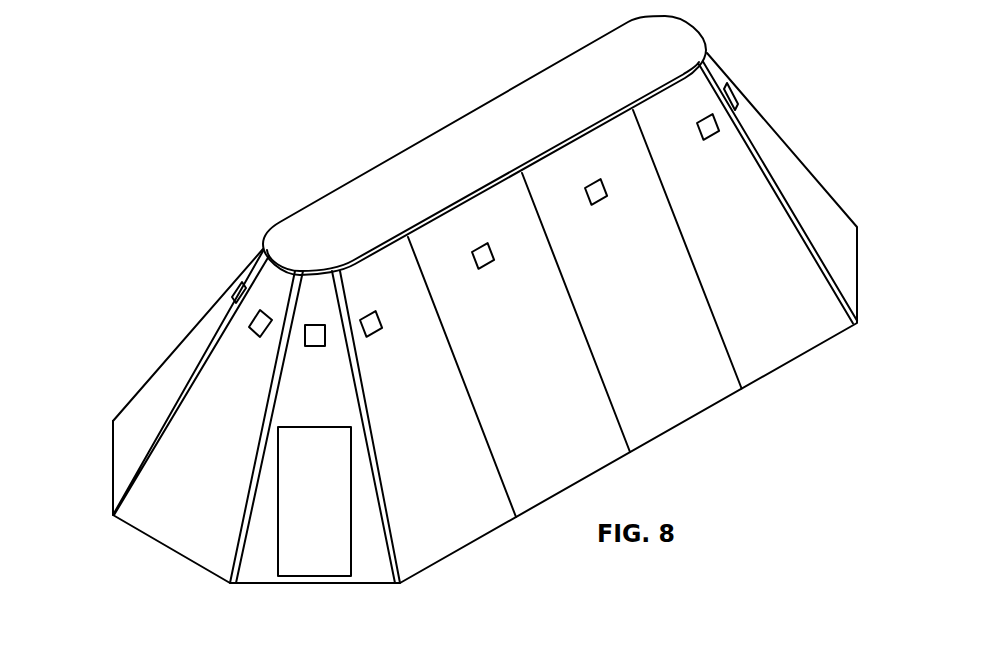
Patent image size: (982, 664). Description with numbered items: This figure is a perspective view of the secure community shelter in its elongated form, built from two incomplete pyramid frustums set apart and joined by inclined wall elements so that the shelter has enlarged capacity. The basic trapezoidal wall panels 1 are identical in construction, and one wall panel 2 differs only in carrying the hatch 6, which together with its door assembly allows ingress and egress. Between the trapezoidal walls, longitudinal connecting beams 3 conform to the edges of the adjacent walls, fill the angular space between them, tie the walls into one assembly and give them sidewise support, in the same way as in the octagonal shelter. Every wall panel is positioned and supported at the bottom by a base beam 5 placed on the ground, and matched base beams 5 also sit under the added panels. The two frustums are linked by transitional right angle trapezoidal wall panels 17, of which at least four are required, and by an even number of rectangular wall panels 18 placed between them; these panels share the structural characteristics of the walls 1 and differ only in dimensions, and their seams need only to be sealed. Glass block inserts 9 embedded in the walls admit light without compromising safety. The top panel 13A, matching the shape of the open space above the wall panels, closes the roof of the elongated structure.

The wall panel 1 is at (200, 415).
The wall panel with door hatch 2 is at (300, 398).
The longitudinal connecting beam 3 is at (213, 352).
The base beam 5 is at (113, 473).
The hatch 6 is at (310, 502).
The glass block insert 9 is at (233, 280).
The top panel 13A is at (308, 233).
The right angle trapezoidal wall panel 17 is at (395, 283).
The rectangular wall panel 18 is at (497, 222).